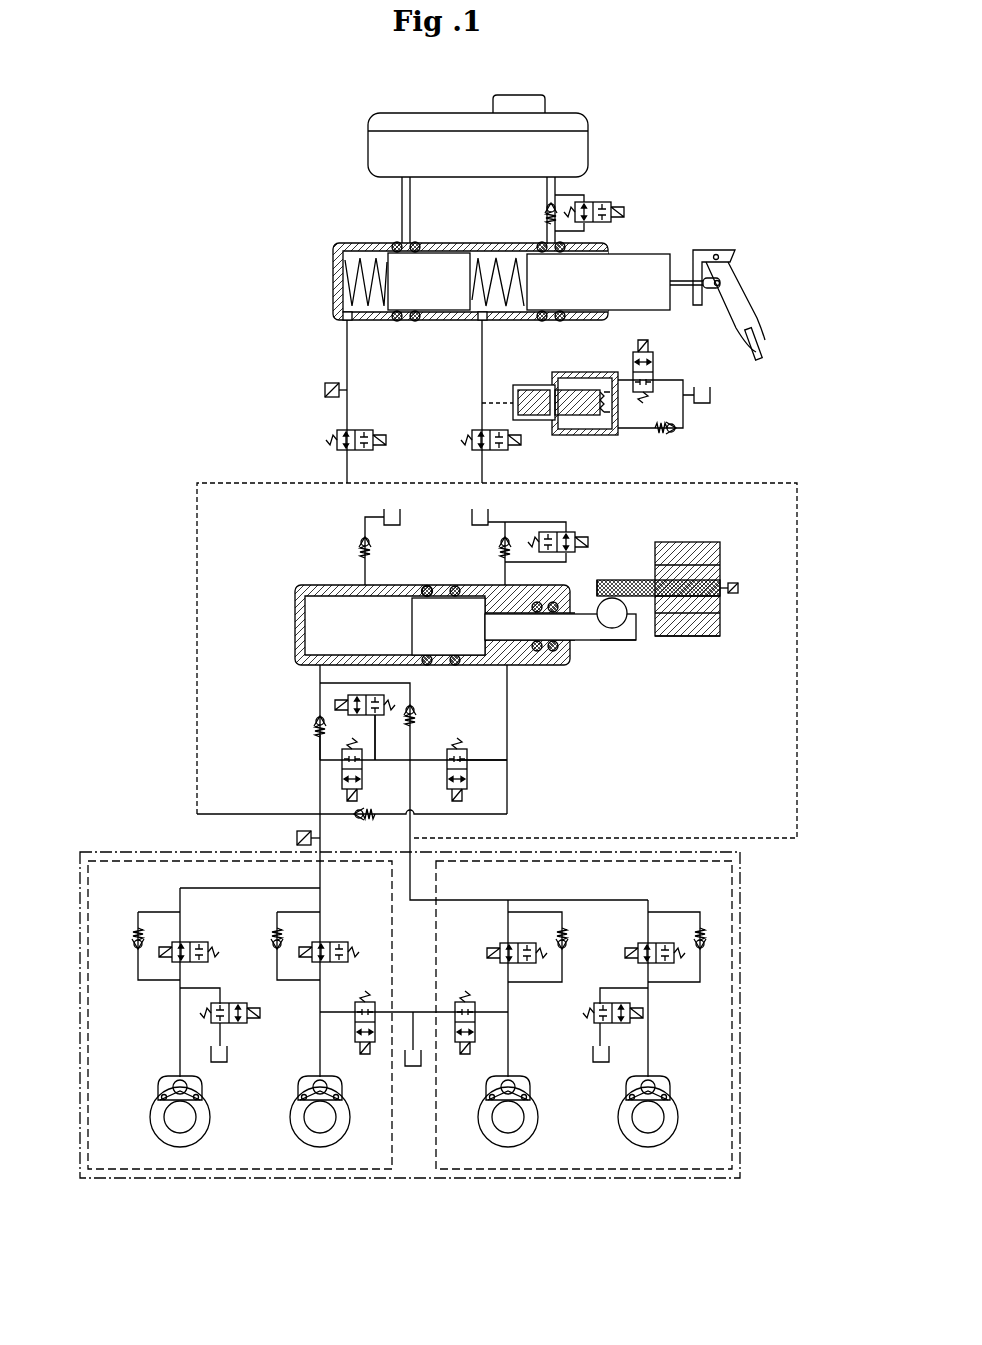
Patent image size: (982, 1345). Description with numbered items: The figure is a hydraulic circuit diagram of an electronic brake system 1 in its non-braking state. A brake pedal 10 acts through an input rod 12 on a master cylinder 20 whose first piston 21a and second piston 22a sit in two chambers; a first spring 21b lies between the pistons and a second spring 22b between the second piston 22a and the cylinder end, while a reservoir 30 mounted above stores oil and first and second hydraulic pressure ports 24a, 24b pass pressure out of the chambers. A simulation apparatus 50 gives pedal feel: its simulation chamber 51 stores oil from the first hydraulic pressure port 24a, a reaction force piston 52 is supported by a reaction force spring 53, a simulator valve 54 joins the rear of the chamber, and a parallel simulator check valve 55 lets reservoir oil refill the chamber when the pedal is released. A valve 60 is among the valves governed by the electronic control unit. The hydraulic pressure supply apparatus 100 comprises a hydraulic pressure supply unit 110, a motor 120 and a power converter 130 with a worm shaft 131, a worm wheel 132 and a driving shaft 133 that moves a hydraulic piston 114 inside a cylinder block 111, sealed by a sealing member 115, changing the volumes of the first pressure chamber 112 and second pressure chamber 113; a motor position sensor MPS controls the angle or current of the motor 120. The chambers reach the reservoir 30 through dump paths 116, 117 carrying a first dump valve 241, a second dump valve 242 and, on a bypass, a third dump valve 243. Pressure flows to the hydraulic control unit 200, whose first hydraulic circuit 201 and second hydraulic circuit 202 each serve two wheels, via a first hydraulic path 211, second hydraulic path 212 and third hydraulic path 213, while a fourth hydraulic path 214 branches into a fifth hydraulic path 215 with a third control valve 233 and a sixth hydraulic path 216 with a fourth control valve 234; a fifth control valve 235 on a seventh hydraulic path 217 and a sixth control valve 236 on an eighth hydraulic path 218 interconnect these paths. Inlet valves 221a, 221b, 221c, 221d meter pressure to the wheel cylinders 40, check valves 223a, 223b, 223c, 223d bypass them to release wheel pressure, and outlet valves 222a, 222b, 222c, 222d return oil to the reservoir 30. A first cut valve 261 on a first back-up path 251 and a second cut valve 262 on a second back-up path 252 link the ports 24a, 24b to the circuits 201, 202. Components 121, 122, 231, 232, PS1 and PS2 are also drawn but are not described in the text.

The electronic brake system 1 is at (339, 62).
The brake pedal 10 is at (735, 300).
The input rod 12 is at (685, 278).
The master cylinder 20 is at (333, 262).
The first piston 21a is at (640, 258).
The first spring 21b is at (512, 305).
The second piston 22a is at (450, 252).
The second spring 22b is at (343, 290).
The first hydraulic pressure port 24a is at (478, 320).
The second hydraulic pressure port 24b is at (340, 320).
The reservoir 30 is at (400, 113).
The wheel cylinders 40 is at (204, 1092).
The simulation apparatus 50 is at (606, 370).
The simulation chamber 51 is at (585, 372).
The reaction force piston 52 is at (530, 385).
The reaction force spring 53 is at (560, 388).
The simulator valve 54 is at (655, 360).
The simulator check valve 55 is at (668, 436).
The valve 60 is at (612, 200).
The hydraulic pressure supply apparatus 100 is at (284, 544).
The hydraulic pressure supply unit 110 is at (286, 582).
The cylinder block 111 is at (302, 613).
The first pressure chamber 112 is at (320, 628).
The second pressure chamber 113 is at (558, 658).
The hydraulic piston 114 is at (470, 597).
The sealing member 115 is at (428, 586).
The first dump path 116 is at (365, 565).
The second dump path 117 is at (506, 580).
The motor 120 is at (712, 545).
The stator 121 is at (720, 629).
The rotor 122 is at (720, 602).
The power converter 130 is at (630, 572).
The worm shaft 131 is at (612, 580).
The worm wheel 132 is at (628, 622).
The driving shaft 133 is at (612, 640).
The motor position sensor MPS is at (734, 582).
The hydraulic control unit 200 is at (368, 1222).
The first hydraulic circuit 201 is at (502, 1180).
The second hydraulic circuit 202 is at (355, 1180).
The first hydraulic path 211 is at (318, 675).
The second hydraulic path 212 is at (410, 683).
The third hydraulic path 213 is at (318, 745).
The fourth hydraulic path 214 is at (508, 681).
The fifth hydraulic path 215 is at (507, 760).
The sixth hydraulic path 216 is at (507, 812).
The seventh hydraulic path 217 is at (396, 760).
The eighth hydraulic path 218 is at (374, 716).
The inlet valve 221a is at (659, 940).
The inlet valve 221b is at (520, 940).
The inlet valve 221c is at (346, 940).
The inlet valve 221d is at (204, 940).
The outlet valve 222a is at (590, 1012).
The outlet valve 222b is at (470, 1000).
The outlet valve 222c is at (365, 1000).
The outlet valve 222d is at (250, 1023).
The check valve 223a is at (712, 946).
The check valve 223b is at (566, 950).
The check valve 223c is at (275, 952).
The check valve 223d is at (137, 917).
The first check valve 231 is at (414, 716).
The second check valve 232 is at (316, 724).
The third control valve 233 is at (458, 750).
The fourth control valve 234 is at (367, 820).
The fifth control valve 235 is at (342, 775).
The sixth control valve 236 is at (332, 704).
The first dump valve 241 is at (362, 540).
The second dump valve 242 is at (507, 538).
The third dump valve 243 is at (556, 530).
The first back-up path 251 is at (480, 365).
The second back-up path 252 is at (345, 365).
The first cut valve 261 is at (472, 440).
The second cut valve 262 is at (329, 440).
The hydraulic flow path pressure sensor PS1 is at (297, 838).
The backup flow path pressure sensor PS2 is at (325, 390).